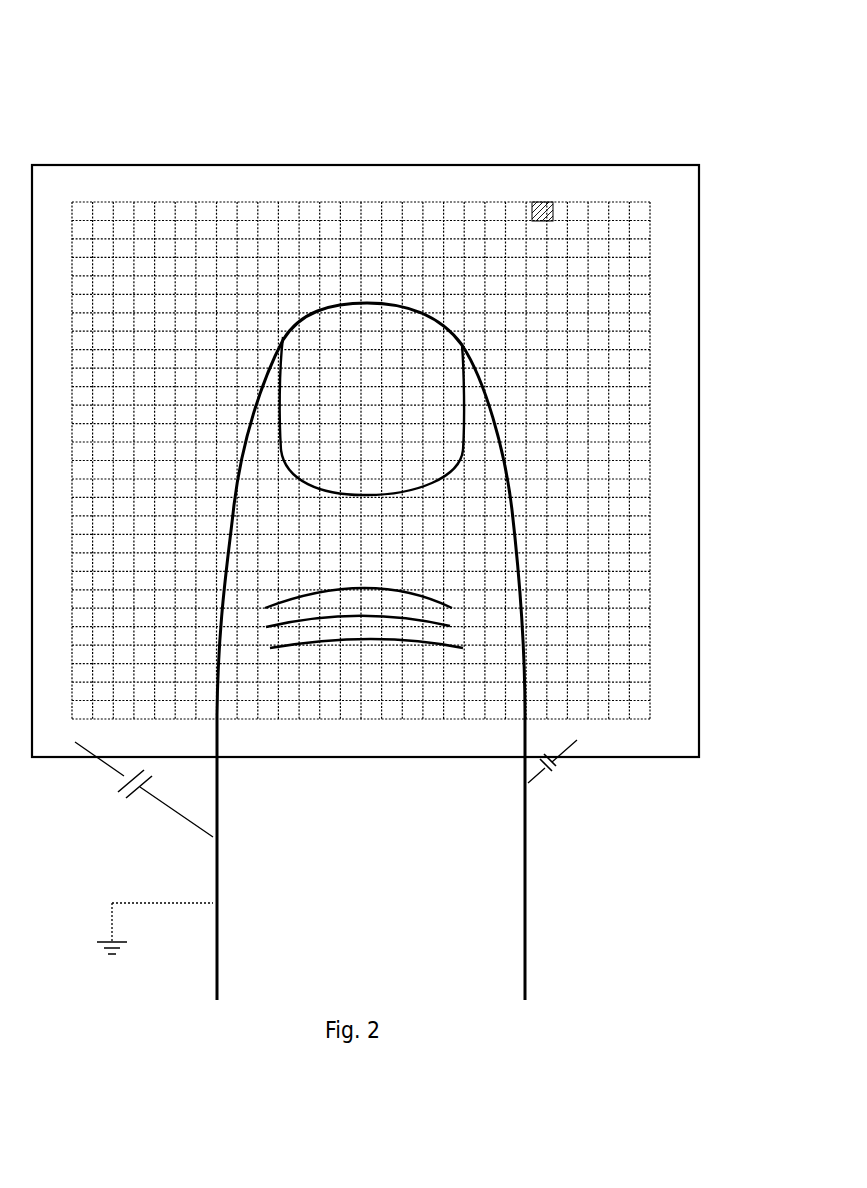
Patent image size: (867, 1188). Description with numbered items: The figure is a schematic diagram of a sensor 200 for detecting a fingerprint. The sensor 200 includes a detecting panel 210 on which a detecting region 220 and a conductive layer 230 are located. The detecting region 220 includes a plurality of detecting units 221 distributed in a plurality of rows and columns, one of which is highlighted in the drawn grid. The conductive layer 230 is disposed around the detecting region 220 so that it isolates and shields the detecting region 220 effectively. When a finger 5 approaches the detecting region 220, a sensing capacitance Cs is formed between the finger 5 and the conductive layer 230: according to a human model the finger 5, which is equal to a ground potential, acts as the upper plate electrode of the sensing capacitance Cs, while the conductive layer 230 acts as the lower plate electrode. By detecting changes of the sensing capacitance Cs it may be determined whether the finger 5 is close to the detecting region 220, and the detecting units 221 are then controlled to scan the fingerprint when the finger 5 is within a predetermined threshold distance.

The sensor 200 is at (407, 122).
The detecting panel 210 is at (282, 165).
The detecting region 220 is at (127, 202).
The detecting unit 221 is at (541, 202).
The conductive layer 230 is at (455, 185).
The finger 5 is at (490, 790).
The sensing capacitance Cs is at (118, 796).